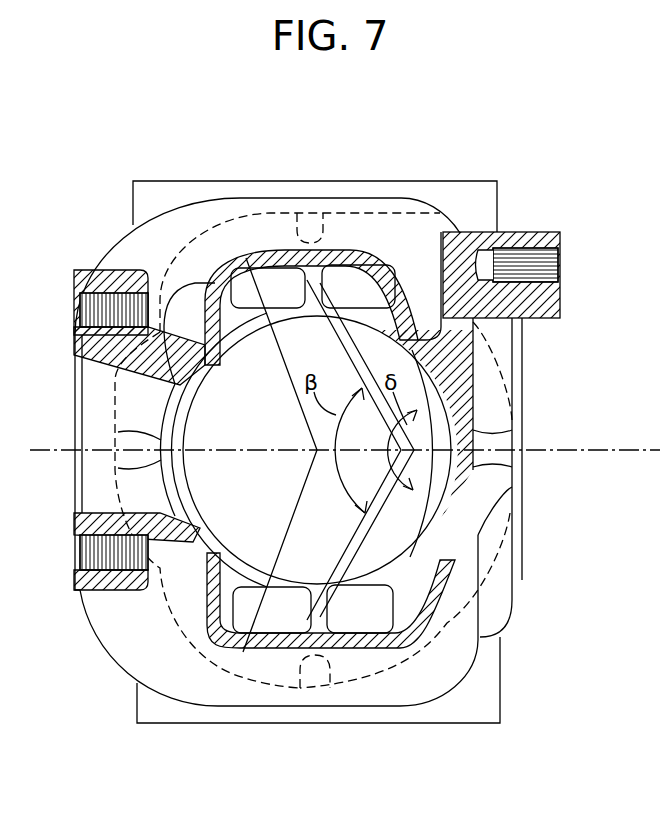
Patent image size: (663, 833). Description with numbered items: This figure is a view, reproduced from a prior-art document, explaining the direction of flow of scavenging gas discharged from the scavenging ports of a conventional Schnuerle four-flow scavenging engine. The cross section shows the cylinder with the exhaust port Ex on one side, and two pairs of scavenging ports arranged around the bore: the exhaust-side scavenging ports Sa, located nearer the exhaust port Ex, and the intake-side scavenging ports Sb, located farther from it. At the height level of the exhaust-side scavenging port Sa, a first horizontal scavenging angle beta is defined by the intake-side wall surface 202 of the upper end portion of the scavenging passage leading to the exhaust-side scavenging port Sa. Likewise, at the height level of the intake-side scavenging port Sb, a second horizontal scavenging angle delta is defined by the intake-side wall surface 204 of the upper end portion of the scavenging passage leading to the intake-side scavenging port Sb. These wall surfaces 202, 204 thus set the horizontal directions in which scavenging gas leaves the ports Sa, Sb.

The intake-side wall surface 202 is at (302, 288).
The intake-side wall surface 204 is at (382, 288).
The exhaust-side scavenging port Sa is at (268, 316).
The intake-side scavenging port Sb is at (358, 314).
The exhaust port Ex is at (95, 389).